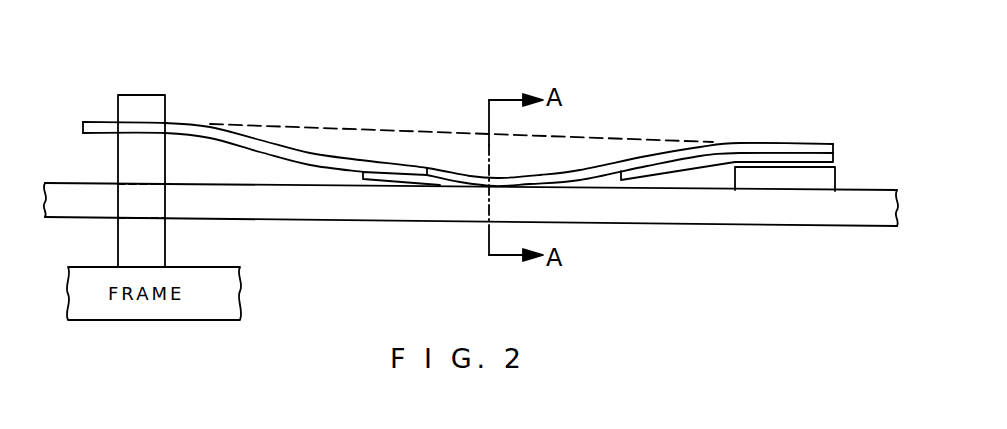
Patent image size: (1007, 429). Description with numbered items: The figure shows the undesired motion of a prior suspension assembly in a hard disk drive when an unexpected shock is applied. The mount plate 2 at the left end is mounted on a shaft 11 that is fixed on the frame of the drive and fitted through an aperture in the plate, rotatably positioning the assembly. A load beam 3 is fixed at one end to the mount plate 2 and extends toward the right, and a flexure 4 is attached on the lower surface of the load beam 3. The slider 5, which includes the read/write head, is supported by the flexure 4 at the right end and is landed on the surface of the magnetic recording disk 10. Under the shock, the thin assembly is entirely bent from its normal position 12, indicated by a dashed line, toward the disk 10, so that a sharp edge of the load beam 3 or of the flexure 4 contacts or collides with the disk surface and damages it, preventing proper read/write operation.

The mount plate 2 is at (258, 136).
The load beam 3 is at (832, 147).
The flexure 4 is at (832, 158).
The slider 5 is at (825, 178).
The magnetic recording disk 10 is at (822, 218).
The shaft 11 is at (137, 105).
The normal position 12 is at (417, 131).